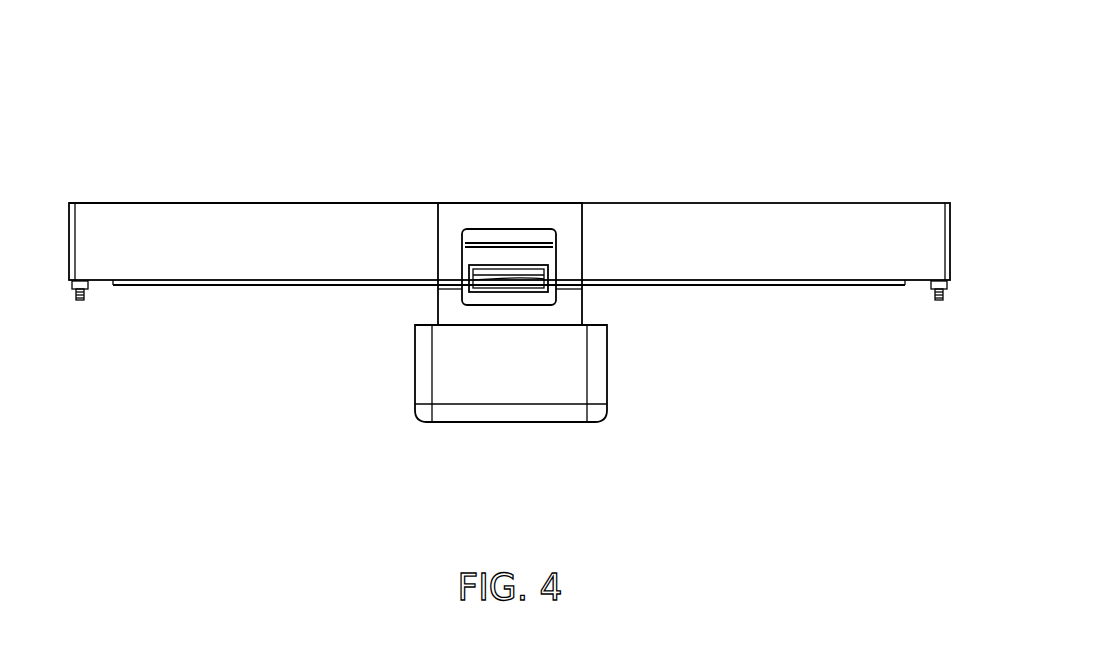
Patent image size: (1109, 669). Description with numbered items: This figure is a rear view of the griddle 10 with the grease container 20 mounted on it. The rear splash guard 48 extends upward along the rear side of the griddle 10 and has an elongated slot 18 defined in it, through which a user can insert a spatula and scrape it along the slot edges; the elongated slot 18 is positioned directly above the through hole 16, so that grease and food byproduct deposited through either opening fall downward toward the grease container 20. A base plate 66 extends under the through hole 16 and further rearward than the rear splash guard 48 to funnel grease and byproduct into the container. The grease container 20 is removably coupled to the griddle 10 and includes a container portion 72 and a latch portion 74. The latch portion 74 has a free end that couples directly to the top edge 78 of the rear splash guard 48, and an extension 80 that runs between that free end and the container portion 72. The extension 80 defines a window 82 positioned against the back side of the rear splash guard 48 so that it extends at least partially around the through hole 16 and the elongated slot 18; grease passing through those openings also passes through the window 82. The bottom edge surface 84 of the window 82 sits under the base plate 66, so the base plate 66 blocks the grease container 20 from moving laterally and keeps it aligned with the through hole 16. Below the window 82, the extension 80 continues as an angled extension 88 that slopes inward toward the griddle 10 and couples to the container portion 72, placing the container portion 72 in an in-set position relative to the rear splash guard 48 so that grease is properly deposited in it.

The griddle 10 is at (940, 112).
The through hole 16 is at (530, 270).
The elongated slot 18 is at (530, 245).
The grease container 20 is at (622, 376).
The rear splash guard 48 is at (805, 232).
The base plate 66 is at (511, 291).
The container portion 72 is at (415, 375).
The latch portion 74 is at (586, 239).
The top edge 78 is at (292, 203).
The extension 80 is at (445, 242).
The window 82 is at (465, 259).
The bottom edge surface 84 is at (472, 307).
The angled extension 88 is at (570, 312).